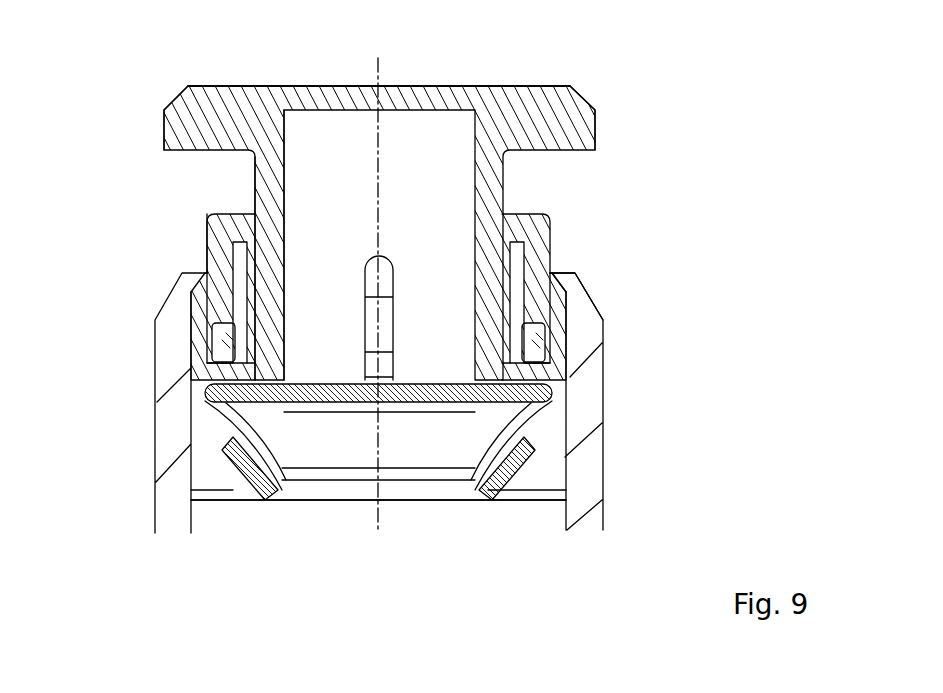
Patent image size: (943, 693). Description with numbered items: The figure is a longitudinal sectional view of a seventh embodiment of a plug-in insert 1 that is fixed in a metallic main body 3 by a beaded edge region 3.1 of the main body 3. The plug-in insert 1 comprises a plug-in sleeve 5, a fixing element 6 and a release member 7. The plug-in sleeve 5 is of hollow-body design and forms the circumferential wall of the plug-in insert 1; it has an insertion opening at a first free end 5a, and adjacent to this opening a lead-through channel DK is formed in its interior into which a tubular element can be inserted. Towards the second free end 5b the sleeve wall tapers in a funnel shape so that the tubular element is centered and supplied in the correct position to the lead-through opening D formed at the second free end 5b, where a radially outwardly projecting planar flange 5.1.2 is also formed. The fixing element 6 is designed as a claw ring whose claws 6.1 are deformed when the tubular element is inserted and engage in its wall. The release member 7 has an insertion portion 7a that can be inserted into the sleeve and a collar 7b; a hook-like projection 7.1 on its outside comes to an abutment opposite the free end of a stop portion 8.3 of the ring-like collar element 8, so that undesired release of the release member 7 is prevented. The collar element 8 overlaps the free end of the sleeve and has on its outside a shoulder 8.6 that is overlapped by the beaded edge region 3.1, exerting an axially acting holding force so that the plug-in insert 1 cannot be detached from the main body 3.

The plug-in insert 1 is at (610, 75).
The lead-through channel DK is at (333, 80).
The release member 7 is at (592, 164).
The insertion portion 7a is at (255, 190).
The collar 7b is at (598, 121).
The projection 7.1 is at (240, 310).
The collar element 8 is at (186, 243).
The stop portion 8.3 is at (505, 266).
The shoulder 8.6 is at (562, 282).
The plug-in sleeve 5 is at (152, 266).
The first free end 5a is at (192, 203).
The second free end 5b is at (510, 520).
The flange 5.1.2 is at (198, 520).
The main body 3 is at (153, 442).
The edge region 3.1 is at (562, 280).
The fixing element 6 is at (200, 374).
The claws 6.1 is at (490, 400).
The lead-through opening D is at (298, 514).